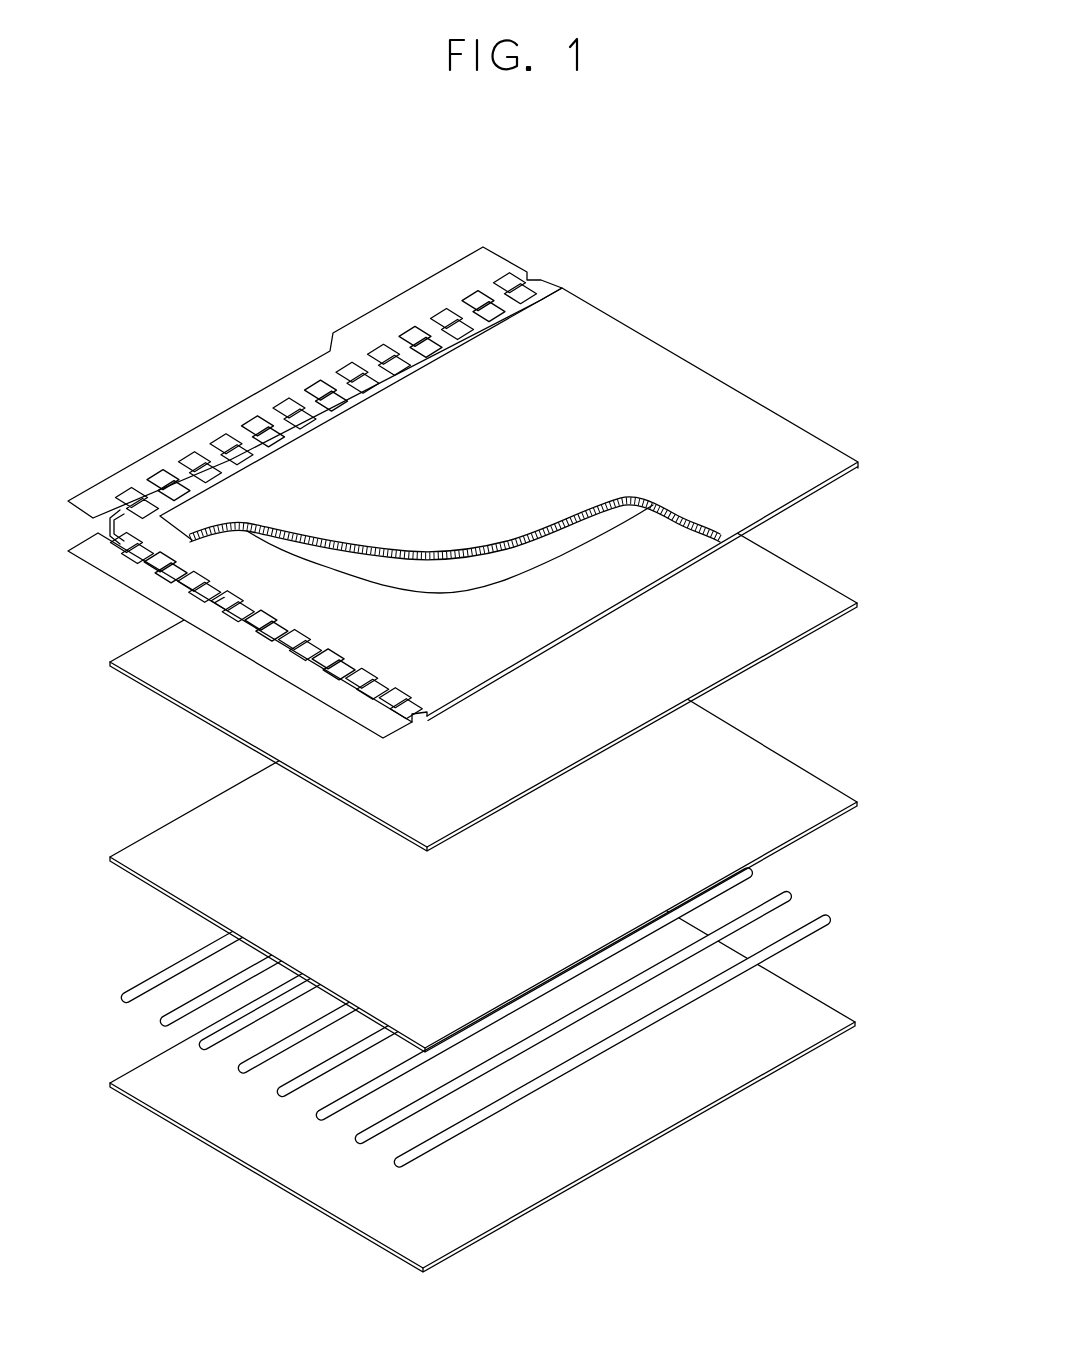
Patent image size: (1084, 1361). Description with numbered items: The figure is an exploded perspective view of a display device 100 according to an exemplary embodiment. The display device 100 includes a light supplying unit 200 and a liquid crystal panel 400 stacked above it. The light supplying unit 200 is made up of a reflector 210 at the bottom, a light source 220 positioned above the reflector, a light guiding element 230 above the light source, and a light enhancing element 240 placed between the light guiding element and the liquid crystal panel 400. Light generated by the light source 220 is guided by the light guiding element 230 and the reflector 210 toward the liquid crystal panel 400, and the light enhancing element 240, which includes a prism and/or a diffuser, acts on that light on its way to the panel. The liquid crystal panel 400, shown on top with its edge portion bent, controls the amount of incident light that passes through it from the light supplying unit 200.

The display device 100 is at (495, 742).
The light supplying unit 200 is at (495, 845).
The reflector 210 is at (853, 1023).
The light source 220 is at (832, 922).
The light guiding element 230 is at (857, 803).
The light enhancing element 240 is at (857, 603).
The liquid crystal panel 400 is at (857, 430).